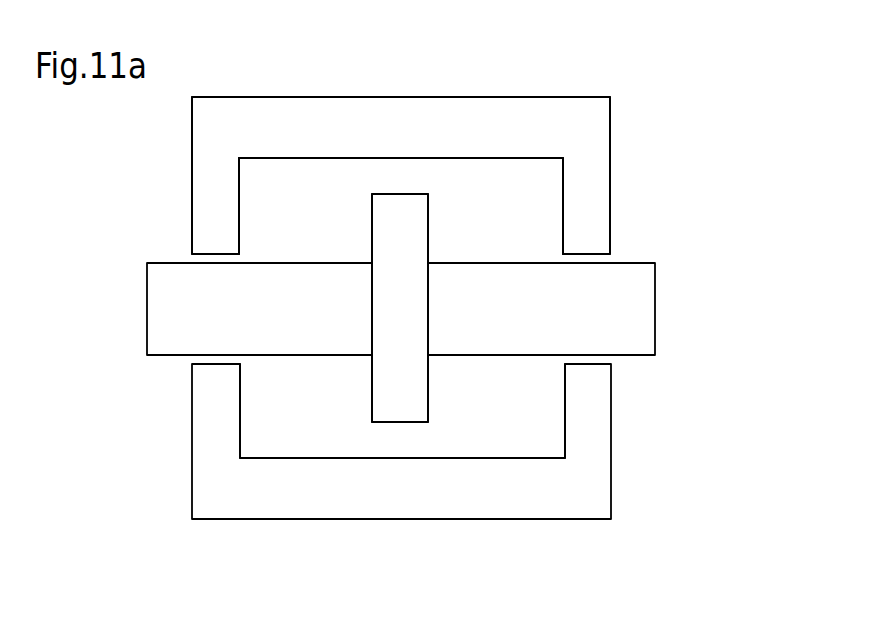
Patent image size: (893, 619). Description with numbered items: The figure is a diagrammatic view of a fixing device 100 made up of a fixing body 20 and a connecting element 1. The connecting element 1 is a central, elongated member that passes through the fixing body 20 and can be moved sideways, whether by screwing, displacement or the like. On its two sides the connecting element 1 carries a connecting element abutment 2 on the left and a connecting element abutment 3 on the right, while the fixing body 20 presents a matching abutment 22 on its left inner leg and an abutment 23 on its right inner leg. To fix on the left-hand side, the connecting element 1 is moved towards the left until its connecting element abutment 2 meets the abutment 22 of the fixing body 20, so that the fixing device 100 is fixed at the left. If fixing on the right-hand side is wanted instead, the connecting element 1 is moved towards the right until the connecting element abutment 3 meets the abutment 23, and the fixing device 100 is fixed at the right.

The fixing device 100 is at (650, 110).
The fixing body 20 is at (240, 120).
The abutment 22 is at (240, 205).
The abutment 23 is at (563, 185).
The connecting element 1 is at (407, 308).
The connecting element abutment 2 is at (370, 220).
The connecting element abutment 3 is at (430, 223).